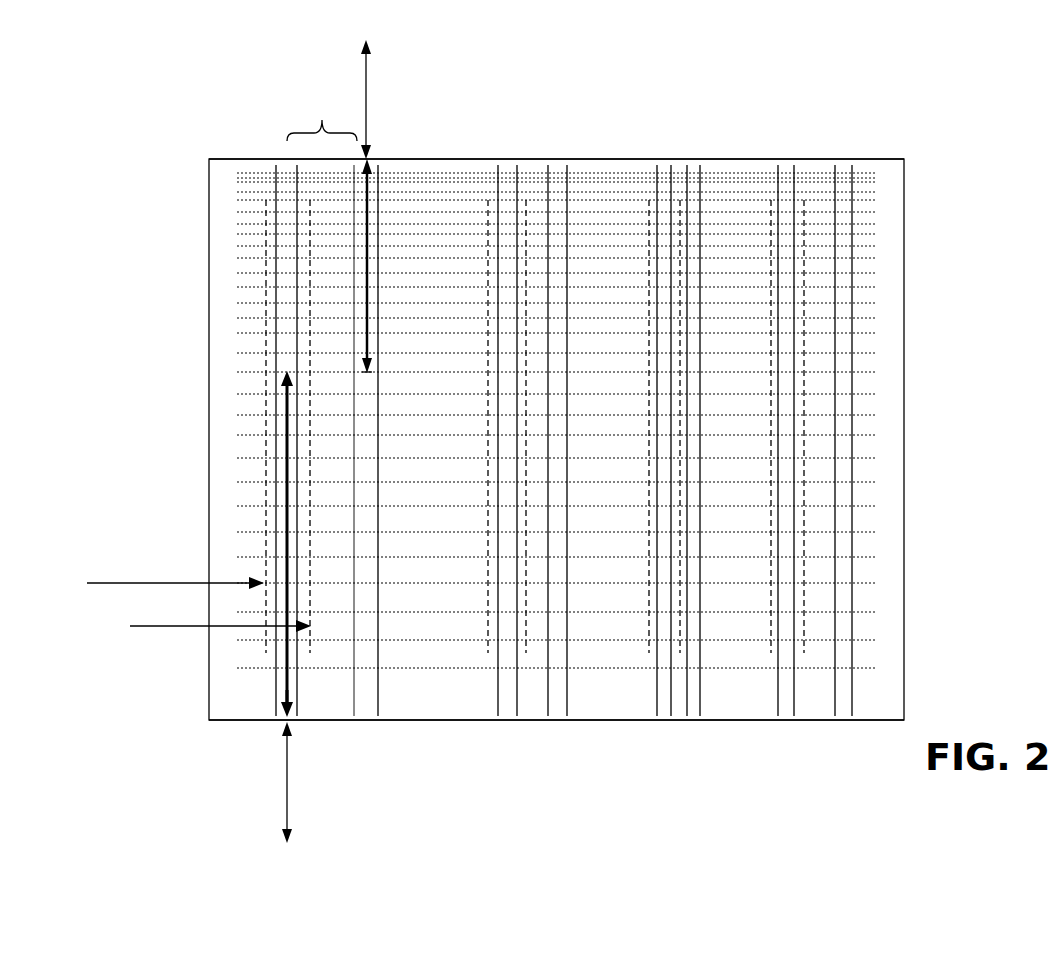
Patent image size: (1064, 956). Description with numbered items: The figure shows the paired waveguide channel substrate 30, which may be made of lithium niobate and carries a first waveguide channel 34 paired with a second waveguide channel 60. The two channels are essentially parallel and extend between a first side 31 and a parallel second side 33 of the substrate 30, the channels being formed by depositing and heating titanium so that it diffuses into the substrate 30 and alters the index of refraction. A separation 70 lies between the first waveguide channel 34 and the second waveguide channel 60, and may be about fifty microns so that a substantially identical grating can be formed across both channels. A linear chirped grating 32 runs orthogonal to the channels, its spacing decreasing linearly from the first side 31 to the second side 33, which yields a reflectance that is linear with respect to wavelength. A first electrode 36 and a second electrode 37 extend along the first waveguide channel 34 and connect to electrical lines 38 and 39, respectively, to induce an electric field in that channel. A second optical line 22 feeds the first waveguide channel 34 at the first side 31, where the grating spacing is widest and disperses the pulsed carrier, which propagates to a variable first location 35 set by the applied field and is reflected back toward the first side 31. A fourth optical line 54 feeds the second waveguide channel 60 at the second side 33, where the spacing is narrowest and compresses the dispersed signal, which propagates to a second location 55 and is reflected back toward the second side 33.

The second optical line 22 is at (288, 808).
The paired waveguide channel substrate 30 is at (597, 138).
The first side 31 is at (637, 720).
The linear chirped grating 32 is at (864, 207).
The second side 33 is at (712, 160).
The first waveguide channel 34 is at (283, 695).
The first location 35 is at (287, 370).
The first electrode 36 is at (265, 230).
The second electrode 37 is at (310, 303).
The electrical line 38 is at (182, 578).
The electrical line 39 is at (183, 627).
The fourth optical line 54 is at (366, 72).
The second location 55 is at (368, 372).
The second waveguide channel 60 is at (371, 205).
The separation 70 is at (322, 120).